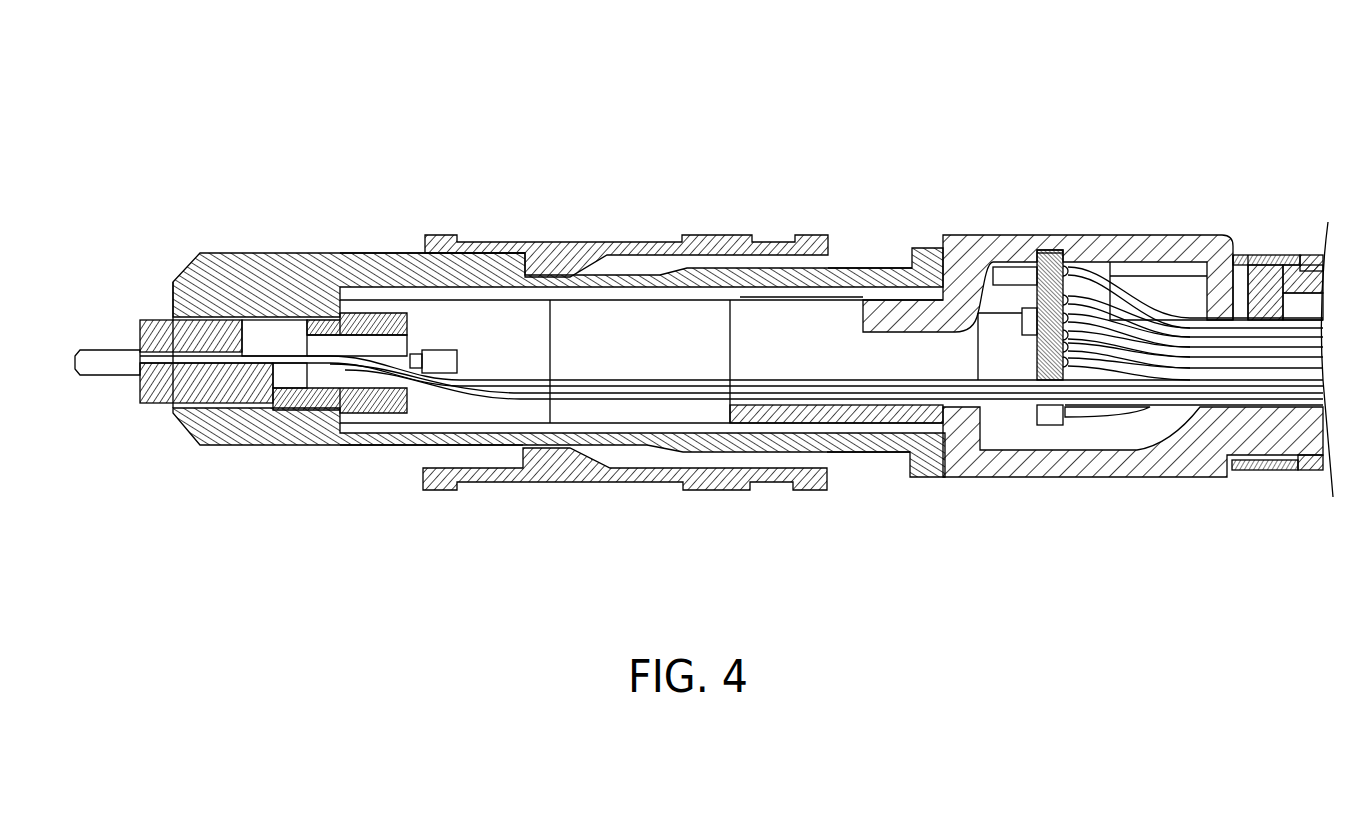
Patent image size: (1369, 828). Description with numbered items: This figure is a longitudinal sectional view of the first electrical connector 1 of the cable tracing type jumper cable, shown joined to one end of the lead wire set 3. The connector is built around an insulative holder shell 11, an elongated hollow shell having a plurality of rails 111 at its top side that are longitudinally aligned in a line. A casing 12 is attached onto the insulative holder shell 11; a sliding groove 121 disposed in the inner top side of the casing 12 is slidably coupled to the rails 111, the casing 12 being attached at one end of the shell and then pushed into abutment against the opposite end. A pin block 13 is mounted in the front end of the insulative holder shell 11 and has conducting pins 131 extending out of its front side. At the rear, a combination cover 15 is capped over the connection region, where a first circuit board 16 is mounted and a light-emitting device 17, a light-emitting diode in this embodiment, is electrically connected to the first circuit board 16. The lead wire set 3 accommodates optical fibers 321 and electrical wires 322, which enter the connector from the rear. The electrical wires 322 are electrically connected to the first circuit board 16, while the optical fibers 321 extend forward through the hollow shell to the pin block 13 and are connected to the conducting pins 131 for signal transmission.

The first electrical connector 1 is at (383, 149).
The insulative holder shell 11 is at (324, 251).
The rails 111 is at (492, 256).
The casing 12 is at (610, 241).
The sliding groove 121 is at (805, 263).
The pin block 13 is at (147, 317).
The conducting pins 131 is at (105, 366).
The combination cover 15 is at (989, 236).
The first circuit board 16 is at (1048, 251).
The light-emitting device 17 is at (1098, 268).
The lead wire set 3 is at (1305, 252).
The optical fibers 321 is at (656, 393).
The electrical wires 322 is at (1147, 305).